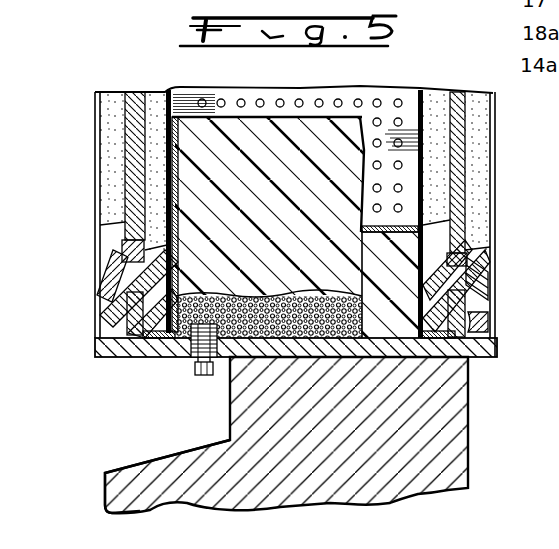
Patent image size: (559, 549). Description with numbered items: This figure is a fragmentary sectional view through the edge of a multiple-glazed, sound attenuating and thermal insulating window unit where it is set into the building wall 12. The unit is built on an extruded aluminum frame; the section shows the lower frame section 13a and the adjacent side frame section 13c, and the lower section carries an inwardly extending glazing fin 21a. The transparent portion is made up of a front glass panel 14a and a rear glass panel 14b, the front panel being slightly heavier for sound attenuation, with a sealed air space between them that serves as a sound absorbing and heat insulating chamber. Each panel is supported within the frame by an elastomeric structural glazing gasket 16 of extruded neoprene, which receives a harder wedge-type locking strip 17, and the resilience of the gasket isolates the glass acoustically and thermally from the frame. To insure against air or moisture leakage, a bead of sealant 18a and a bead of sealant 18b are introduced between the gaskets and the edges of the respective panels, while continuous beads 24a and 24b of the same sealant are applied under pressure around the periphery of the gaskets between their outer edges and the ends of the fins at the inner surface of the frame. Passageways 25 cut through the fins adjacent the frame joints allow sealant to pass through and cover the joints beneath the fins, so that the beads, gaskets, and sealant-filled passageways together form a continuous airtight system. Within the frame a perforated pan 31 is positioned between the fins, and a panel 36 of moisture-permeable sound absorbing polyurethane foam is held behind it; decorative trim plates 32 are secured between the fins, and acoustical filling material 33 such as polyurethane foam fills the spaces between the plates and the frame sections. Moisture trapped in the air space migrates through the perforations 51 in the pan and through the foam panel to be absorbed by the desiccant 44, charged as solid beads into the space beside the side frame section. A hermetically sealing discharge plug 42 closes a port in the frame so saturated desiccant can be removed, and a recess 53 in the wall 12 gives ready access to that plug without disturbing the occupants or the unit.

The wall 12 is at (458, 445).
The lower frame section 13a is at (493, 362).
The side frame section 13c is at (115, 118).
The front glass panel 14a is at (128, 152).
The rear glass panel 14b is at (466, 163).
The elastomeric structural glazing gasket 16 is at (103, 307).
The wedge-type locking strip 17 is at (100, 277).
The bead of sealant 18a is at (120, 250).
The bead of sealant 18b is at (493, 303).
The glazing fin 21a is at (128, 358).
The continuous sealant bead 24a is at (110, 332).
The continuous sealant bead 24b is at (490, 323).
The passageway 25 is at (492, 266).
The perforated pan 31 is at (170, 198).
The decorative trim plate 32 is at (410, 355).
The acoustical filling material 33 is at (440, 176).
The sound absorbing foam panel 36 is at (248, 120).
The discharge plug 42 is at (202, 376).
The desiccant 44 is at (182, 357).
The perforations 51 is at (397, 100).
The recess 53 is at (113, 470).